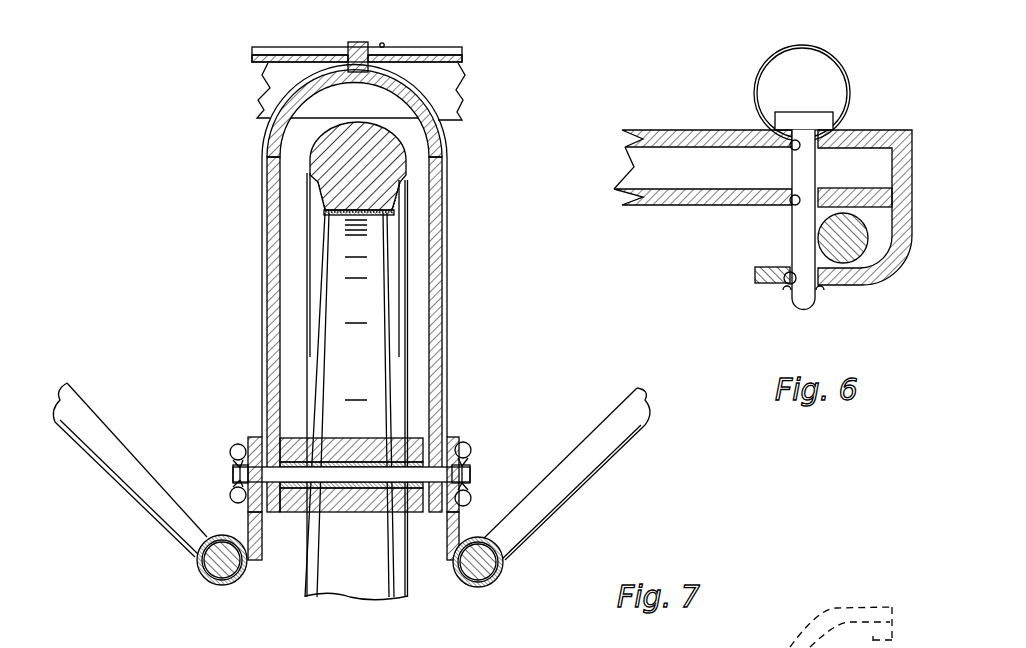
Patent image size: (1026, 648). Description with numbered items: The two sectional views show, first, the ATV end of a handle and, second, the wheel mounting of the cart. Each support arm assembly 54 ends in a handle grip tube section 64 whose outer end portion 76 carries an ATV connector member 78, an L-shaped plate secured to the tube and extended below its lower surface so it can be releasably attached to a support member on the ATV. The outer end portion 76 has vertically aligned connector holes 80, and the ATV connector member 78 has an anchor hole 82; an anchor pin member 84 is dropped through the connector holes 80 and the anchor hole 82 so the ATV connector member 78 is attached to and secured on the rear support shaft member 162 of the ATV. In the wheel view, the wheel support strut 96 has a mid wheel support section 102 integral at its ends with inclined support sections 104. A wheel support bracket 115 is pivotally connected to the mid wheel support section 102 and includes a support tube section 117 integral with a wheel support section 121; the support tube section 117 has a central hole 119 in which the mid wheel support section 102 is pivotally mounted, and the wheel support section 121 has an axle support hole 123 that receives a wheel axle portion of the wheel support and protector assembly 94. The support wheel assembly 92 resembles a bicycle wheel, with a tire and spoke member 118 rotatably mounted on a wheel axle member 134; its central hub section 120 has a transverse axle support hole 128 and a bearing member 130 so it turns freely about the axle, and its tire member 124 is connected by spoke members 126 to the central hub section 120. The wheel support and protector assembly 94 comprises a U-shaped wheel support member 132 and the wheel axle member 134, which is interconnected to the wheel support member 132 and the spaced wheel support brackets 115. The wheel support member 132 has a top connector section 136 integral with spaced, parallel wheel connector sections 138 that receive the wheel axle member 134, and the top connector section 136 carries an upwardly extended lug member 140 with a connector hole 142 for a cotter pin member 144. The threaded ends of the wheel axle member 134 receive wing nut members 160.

In FIG. 6, the support arm assembly 54 is at (625, 138).
In FIG. 6, the handle grip tube section 64 is at (665, 205).
In FIG. 6, the outer end portion 76 is at (867, 132).
In FIG. 6, the ATV connector member 78 is at (898, 268).
In FIG. 6, the connector holes 80 is at (802, 138).
In FIG. 6, the anchor hole 82 is at (788, 287).
In FIG. 6, the anchor pin member 84 is at (797, 130).
In FIG. 6, the rear support shaft member 162 is at (853, 262).
In FIG. 7, the support wheel assembly 92 is at (412, 190).
In FIG. 7, the wheel support and protector assembly 94 is at (242, 167).
In FIG. 7, the wheel support strut 96 is at (110, 457).
In FIG. 7, the mid wheel support section 102 is at (200, 555).
In FIG. 7, the inclined support sections 104 is at (92, 433).
In FIG. 7, the wheel support bracket 115 is at (247, 520).
In FIG. 7, the support tube section 117 is at (193, 538).
In FIG. 7, the tire and spoke member 118 is at (408, 177).
In FIG. 7, the central hole 119 is at (213, 570).
In FIG. 7, the central hub section 120 is at (370, 420).
In FIG. 7, the wheel support section 121 is at (250, 512).
In FIG. 7, the axle support hole 123 is at (236, 448).
In FIG. 7, the tire member 124 is at (406, 150).
In FIG. 7, the spoke members 126 is at (400, 232).
In FIG. 7, the transverse axle support hole 128 is at (448, 417).
In FIG. 7, the bearing member 130 is at (327, 420).
In FIG. 7, the U-shaped wheel support member 132 is at (448, 222).
In FIG. 7, the wheel axle member 134 is at (348, 420).
In FIG. 7, the top connector section 136 is at (422, 107).
In FIG. 7, the wheel connector sections 138 is at (262, 370).
In FIG. 7, the lug member 140 is at (390, 76).
In FIG. 7, the connector hole 142 is at (366, 42).
In FIG. 7, the cotter pin member 144 is at (385, 44).
In FIG. 7, the wing nut members 160 is at (468, 482).